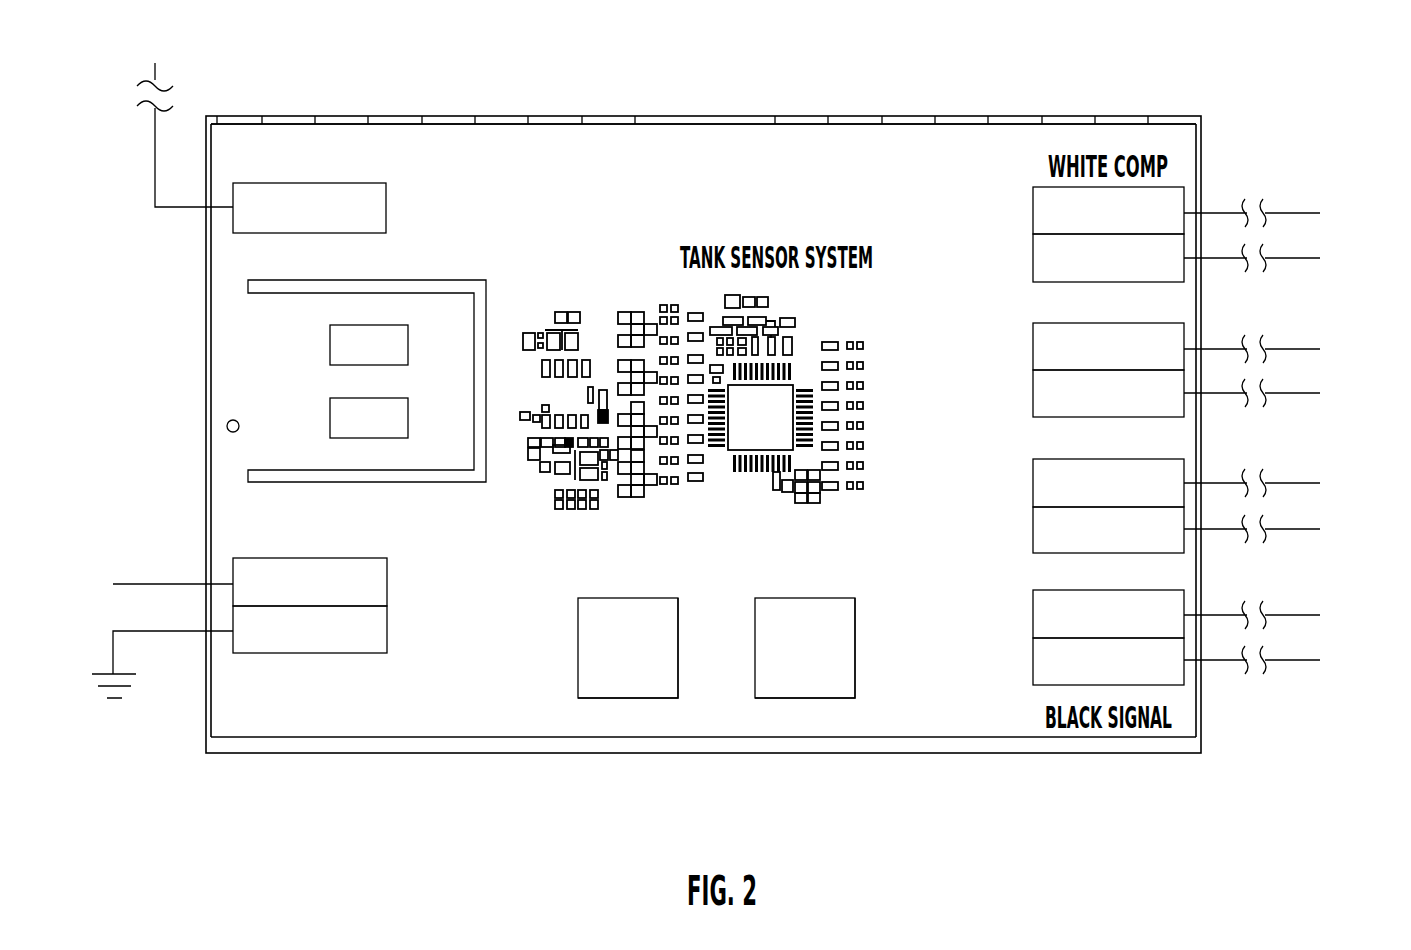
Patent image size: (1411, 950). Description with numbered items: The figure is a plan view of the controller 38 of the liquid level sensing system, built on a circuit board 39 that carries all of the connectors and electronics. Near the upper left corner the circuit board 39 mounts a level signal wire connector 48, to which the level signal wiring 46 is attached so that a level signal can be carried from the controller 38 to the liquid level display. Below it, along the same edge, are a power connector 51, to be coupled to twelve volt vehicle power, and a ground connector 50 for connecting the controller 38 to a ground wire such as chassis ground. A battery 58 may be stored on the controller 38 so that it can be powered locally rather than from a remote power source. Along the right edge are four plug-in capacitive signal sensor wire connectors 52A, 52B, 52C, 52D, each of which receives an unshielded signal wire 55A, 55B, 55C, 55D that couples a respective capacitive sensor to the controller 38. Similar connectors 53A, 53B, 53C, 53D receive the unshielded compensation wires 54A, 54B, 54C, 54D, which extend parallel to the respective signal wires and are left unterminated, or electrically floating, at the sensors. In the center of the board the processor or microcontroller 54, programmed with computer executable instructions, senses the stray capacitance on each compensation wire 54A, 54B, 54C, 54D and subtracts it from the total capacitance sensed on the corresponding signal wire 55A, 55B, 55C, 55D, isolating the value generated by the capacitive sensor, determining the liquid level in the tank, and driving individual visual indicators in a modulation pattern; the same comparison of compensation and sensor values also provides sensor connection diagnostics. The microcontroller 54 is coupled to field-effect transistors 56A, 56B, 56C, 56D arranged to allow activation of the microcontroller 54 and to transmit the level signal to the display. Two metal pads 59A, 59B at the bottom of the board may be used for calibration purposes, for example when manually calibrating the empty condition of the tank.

The controller 38 is at (986, 68).
The circuit board 39 is at (1133, 737).
The level signal wiring 46 is at (150, 75).
The level signal wire connector 48 is at (243, 213).
The ground connector 50 is at (375, 637).
The power connector 51 is at (243, 572).
The capacitive signal sensor wire connector 52A is at (1167, 270).
The capacitive signal sensor wire connector 52B is at (1167, 402).
The capacitive signal sensor wire connector 52C is at (1167, 540).
The capacitive signal sensor wire connector 52D is at (1167, 673).
The white common terminal A 53A is at (1167, 198).
The white common terminal B 53B is at (1167, 341).
The white common terminal C 53C is at (1167, 472).
The white common terminal D 53D is at (1167, 613).
The microcontroller 54 is at (995, 694).
The compensation wire 54A is at (1308, 213).
The compensation wire 54B is at (1308, 349).
The compensation wire 54C is at (1308, 483).
The compensation wire 54D is at (1308, 615).
The signal wire 55A is at (1308, 258).
The signal wire 55B is at (1308, 393).
The signal wire 55C is at (1308, 529).
The signal wire 55D is at (1308, 660).
The field-effect transistor 56A is at (585, 148).
The field-effect transistor 56B is at (490, 116).
The field-effect transistor 56C is at (578, 698).
The field-effect transistor 56D is at (755, 698).
The battery 58 is at (244, 353).
The metal pad 59A is at (630, 668).
The metal pad 59B is at (805, 668).